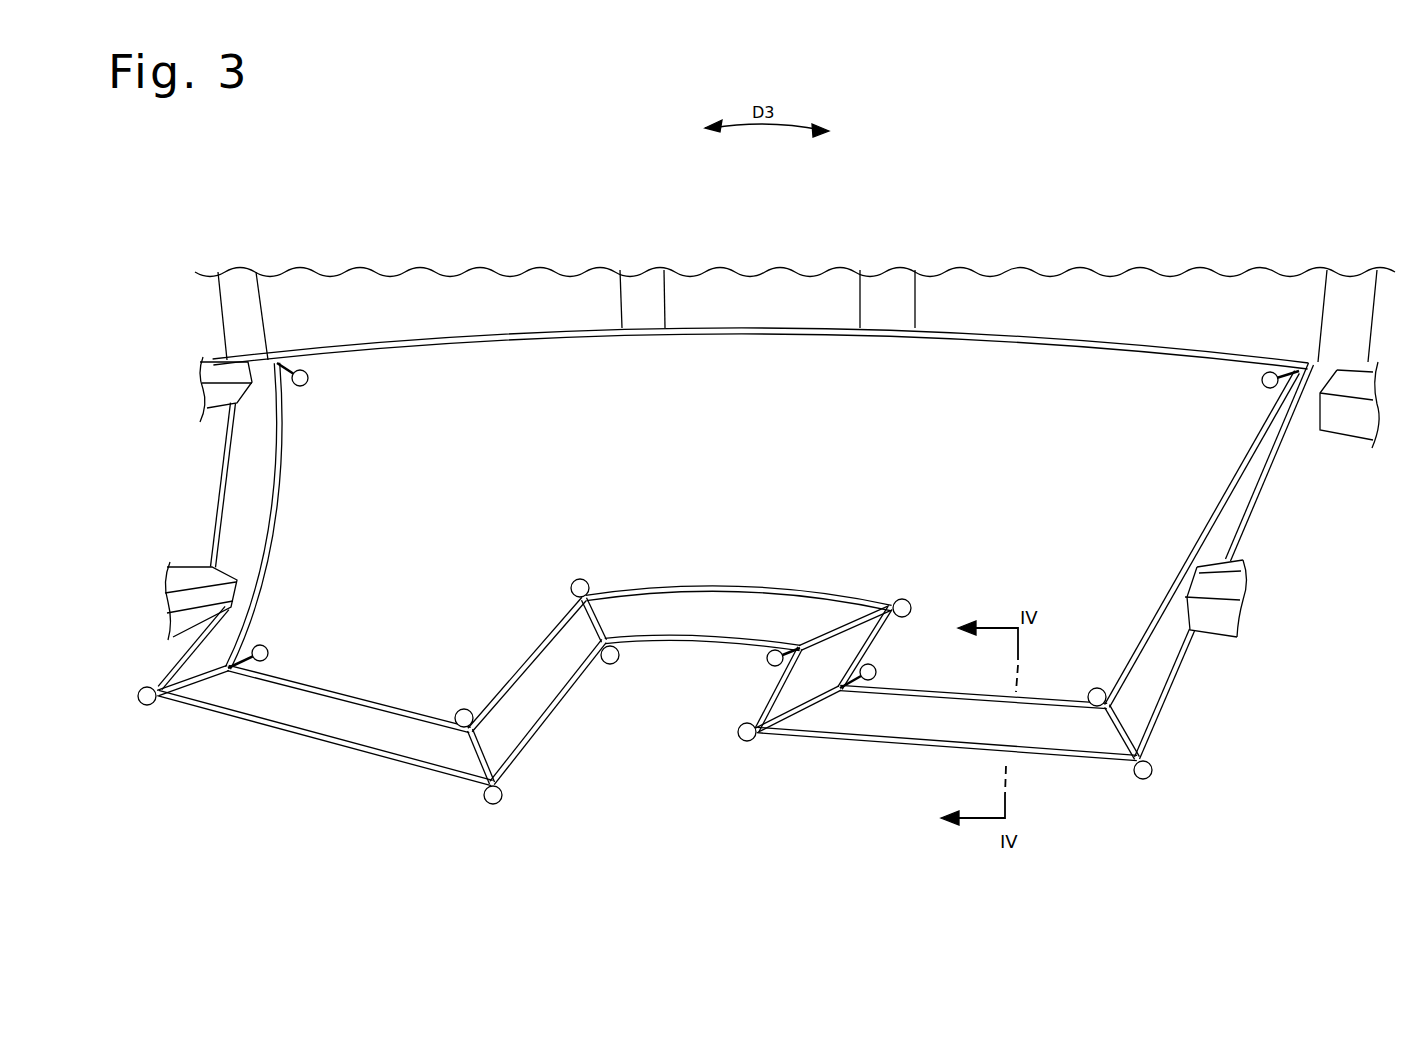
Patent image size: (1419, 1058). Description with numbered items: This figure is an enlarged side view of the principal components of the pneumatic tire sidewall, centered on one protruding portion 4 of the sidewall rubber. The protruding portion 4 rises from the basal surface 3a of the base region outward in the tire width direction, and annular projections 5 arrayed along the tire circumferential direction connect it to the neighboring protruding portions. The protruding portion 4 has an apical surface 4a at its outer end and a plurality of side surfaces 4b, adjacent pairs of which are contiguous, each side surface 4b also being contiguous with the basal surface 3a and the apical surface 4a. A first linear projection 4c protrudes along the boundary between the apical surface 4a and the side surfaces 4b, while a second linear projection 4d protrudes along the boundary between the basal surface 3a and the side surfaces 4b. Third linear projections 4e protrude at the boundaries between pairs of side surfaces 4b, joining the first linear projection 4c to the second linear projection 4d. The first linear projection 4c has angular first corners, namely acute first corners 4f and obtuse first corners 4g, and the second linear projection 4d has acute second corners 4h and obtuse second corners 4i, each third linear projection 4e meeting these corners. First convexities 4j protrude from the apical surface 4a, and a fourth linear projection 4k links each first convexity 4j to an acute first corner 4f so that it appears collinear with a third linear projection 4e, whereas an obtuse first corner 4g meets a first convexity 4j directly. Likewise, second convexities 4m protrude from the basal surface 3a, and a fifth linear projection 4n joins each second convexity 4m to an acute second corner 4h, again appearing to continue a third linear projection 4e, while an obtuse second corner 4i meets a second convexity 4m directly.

The basal surface 3a is at (1290, 713).
The protruding portion 4 is at (730, 615).
The apical surface 4a is at (303, 483).
The side surface 4b is at (247, 437).
The first linear projection 4c is at (697, 612).
The second linear projection 4d is at (407, 763).
The third linear projection 4e is at (205, 680).
The acute first corner 4f is at (283, 357).
The obtuse first corner 4g is at (447, 727).
The acute second corner 4h is at (820, 630).
The obtuse second corner 4i is at (145, 705).
The first convexity 4j is at (310, 385).
The fourth linear projection 4k is at (270, 377).
The second convexity 4m is at (137, 687).
The fifth linear projection 4n is at (770, 625).
The annular projection 5 is at (213, 360).